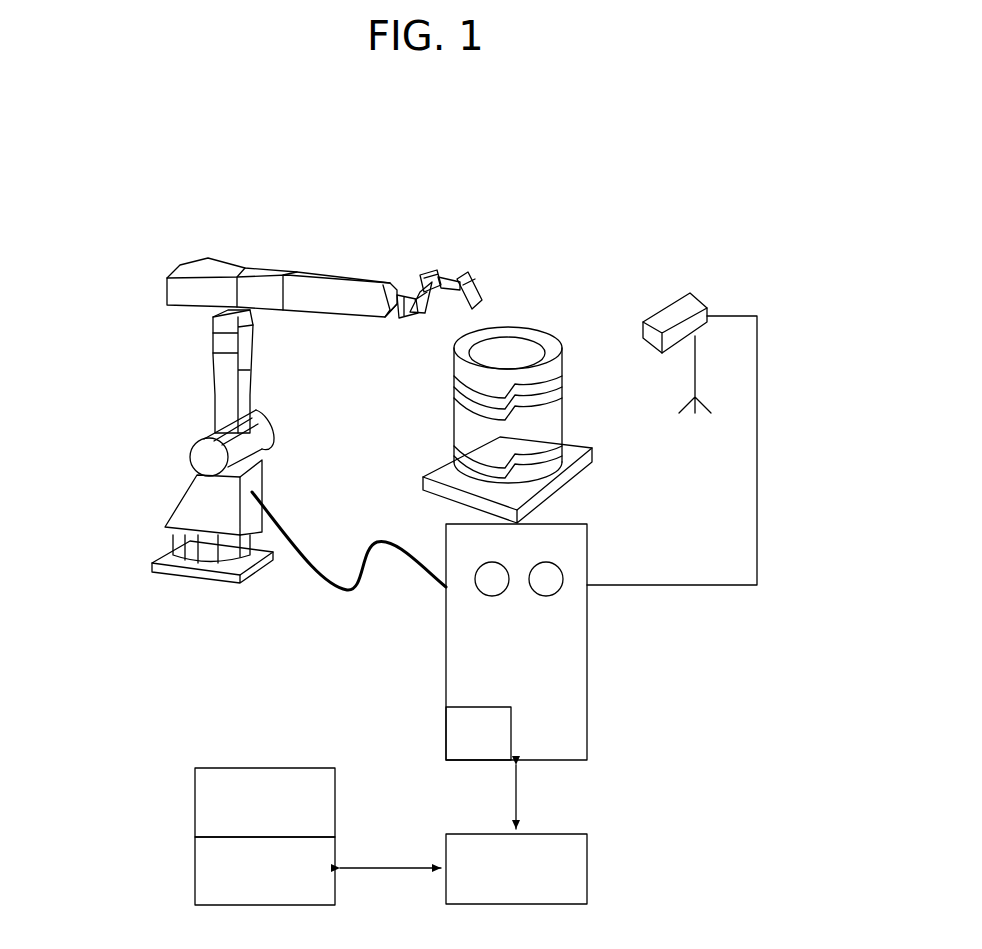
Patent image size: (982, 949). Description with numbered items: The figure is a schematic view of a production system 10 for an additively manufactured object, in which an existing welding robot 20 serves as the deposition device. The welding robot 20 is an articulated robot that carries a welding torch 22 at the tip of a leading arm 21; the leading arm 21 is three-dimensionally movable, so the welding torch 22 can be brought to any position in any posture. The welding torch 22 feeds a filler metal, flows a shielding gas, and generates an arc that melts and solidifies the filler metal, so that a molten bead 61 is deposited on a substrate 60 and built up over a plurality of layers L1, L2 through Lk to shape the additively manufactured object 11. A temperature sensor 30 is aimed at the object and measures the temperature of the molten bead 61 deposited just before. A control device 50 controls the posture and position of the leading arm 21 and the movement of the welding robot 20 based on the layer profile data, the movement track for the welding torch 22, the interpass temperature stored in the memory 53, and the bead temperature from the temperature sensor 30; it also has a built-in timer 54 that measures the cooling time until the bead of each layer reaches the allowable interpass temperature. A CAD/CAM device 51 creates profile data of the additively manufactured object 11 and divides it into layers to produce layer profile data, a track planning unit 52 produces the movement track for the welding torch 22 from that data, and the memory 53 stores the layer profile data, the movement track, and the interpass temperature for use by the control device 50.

The production system for an additively manufactured object 10 is at (586, 182).
The welding robot 20 is at (273, 265).
The leading arm 21 is at (427, 270).
The welding torch 22 is at (460, 280).
The additively manufactured object 11 is at (527, 325).
The temperature sensor 30 is at (699, 290).
The substrate 60 is at (520, 493).
The molten bead 61 is at (462, 392).
The control device 50 is at (588, 702).
The timer 54 is at (446, 716).
The CAD/CAM device 51 is at (195, 802).
The track planning unit 52 is at (195, 874).
The memory 53 is at (588, 872).
The layer Lk is at (553, 370).
The layer L2 is at (553, 453).
The layer L1 is at (556, 470).